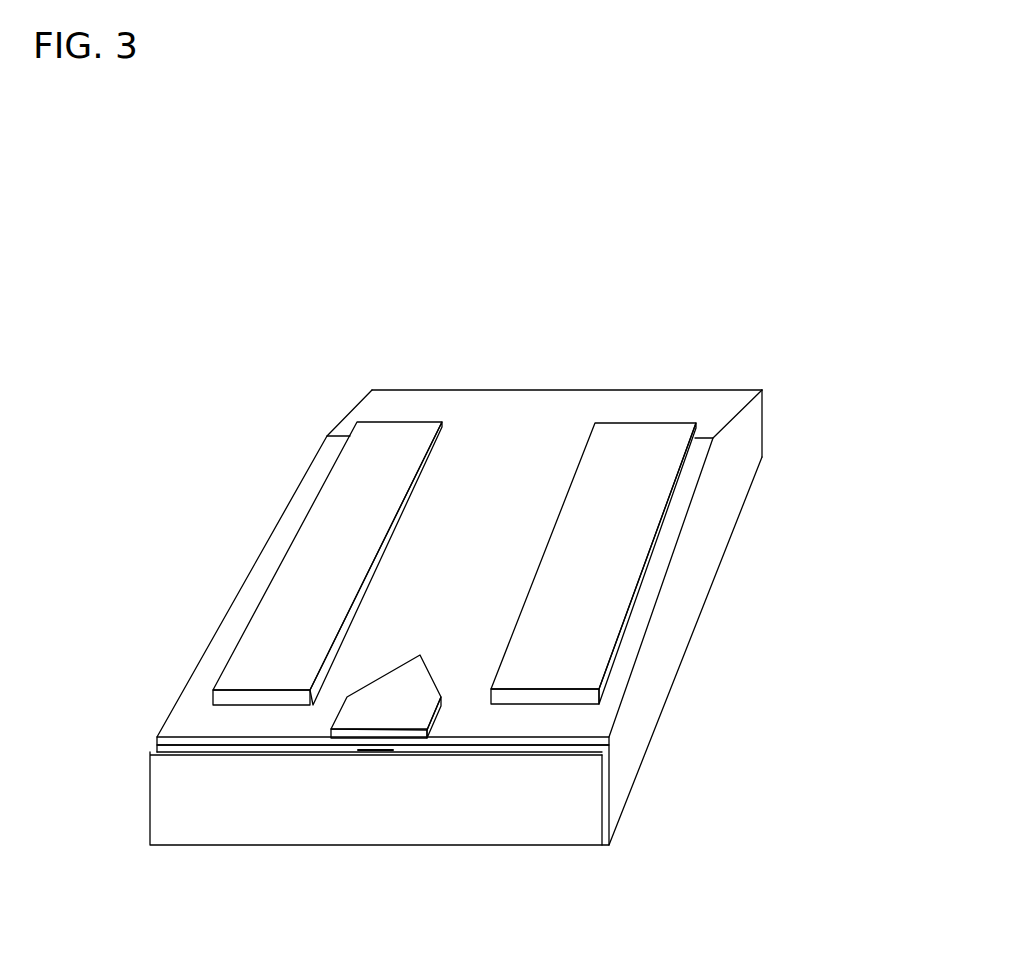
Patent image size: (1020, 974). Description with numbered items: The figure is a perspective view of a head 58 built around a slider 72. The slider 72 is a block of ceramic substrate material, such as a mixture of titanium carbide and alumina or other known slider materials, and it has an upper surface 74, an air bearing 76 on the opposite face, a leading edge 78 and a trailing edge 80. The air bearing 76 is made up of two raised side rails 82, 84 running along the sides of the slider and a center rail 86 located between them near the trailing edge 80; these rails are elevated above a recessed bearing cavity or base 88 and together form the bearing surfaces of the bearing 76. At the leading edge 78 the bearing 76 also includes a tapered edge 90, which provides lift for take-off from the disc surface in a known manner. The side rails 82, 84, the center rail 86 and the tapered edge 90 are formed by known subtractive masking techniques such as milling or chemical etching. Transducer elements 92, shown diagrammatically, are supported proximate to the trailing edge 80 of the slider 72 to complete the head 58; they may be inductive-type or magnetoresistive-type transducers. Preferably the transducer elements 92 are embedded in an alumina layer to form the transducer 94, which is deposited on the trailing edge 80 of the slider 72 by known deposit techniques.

The head 58 is at (814, 268).
The slider 72 is at (511, 382).
The upper surface 74 is at (685, 642).
The air bearing 76 is at (628, 458).
The leading edge 78 is at (708, 391).
The trailing edge 80 is at (445, 745).
The raised side rail 82 is at (352, 542).
The raised side rail 84 is at (545, 548).
The center rail 86 is at (397, 682).
The recessed bearing cavity 88 is at (492, 518).
The tapered edge 90 is at (512, 431).
The transducer elements 92 is at (393, 750).
The transducer 94 is at (567, 748).